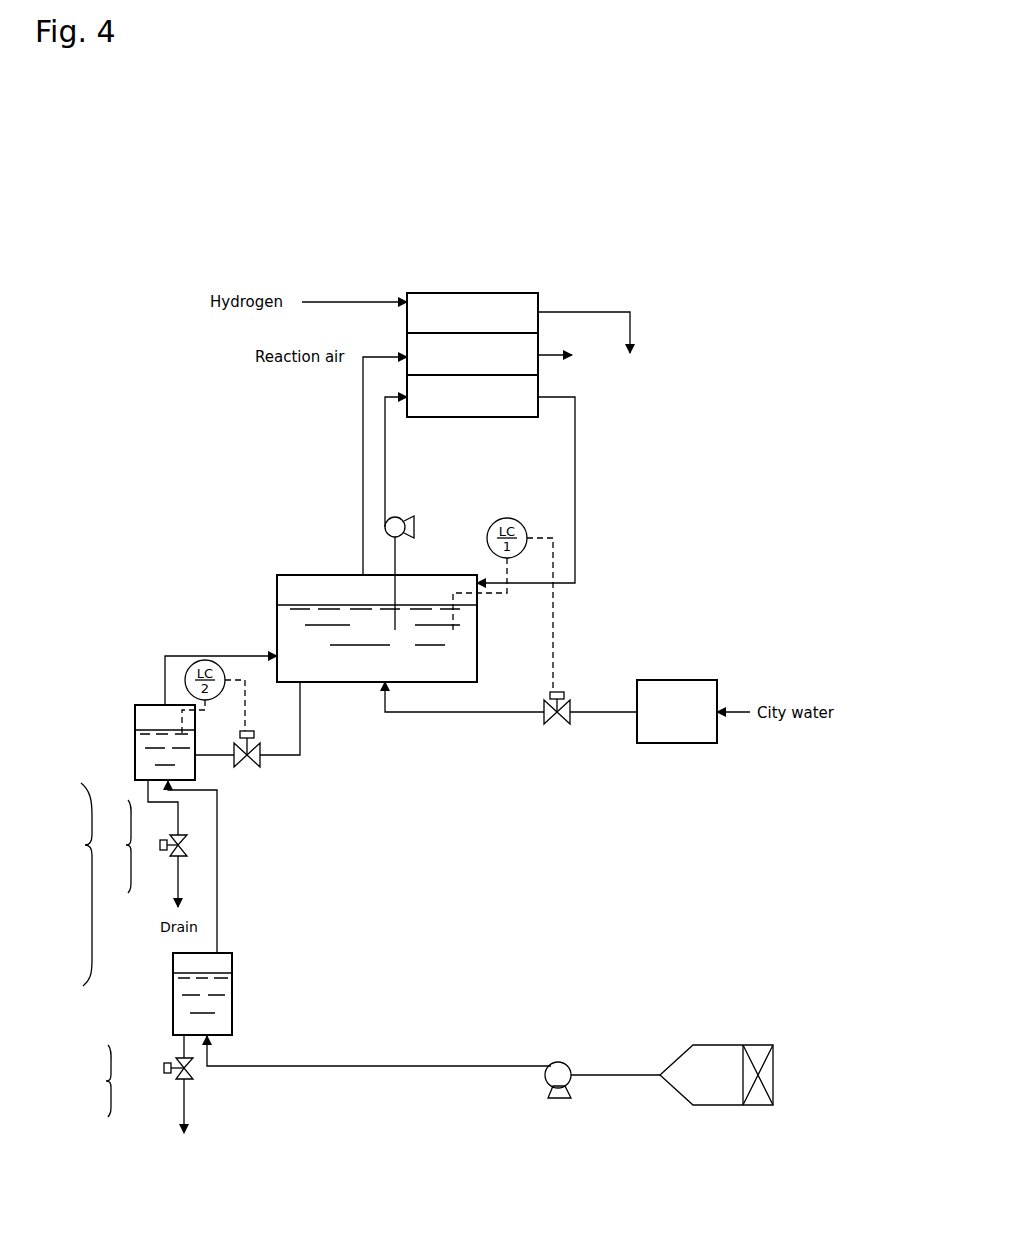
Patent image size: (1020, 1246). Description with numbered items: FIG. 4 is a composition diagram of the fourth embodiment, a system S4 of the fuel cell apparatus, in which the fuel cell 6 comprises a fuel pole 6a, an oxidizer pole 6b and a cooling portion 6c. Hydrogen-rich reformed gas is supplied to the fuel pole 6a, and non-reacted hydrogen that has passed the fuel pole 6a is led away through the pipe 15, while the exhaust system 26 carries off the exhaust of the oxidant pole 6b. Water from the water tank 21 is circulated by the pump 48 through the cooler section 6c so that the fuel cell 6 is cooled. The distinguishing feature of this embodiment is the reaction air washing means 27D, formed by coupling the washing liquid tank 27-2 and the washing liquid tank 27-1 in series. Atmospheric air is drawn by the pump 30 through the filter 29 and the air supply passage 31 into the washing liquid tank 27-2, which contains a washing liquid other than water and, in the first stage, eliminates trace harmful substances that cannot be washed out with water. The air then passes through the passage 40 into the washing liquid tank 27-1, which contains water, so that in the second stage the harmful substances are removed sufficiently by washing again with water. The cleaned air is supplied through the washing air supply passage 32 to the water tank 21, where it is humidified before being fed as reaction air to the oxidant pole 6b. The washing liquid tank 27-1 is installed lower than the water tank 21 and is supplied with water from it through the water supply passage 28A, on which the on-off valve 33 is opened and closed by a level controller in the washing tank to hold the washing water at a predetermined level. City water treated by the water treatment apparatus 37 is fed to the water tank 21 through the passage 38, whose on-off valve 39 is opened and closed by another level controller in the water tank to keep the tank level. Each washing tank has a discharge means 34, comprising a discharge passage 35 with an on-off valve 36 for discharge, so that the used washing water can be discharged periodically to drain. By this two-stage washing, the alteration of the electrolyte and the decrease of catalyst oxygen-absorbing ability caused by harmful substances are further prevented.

The system of the fuel cell apparatus S4 is at (205, 358).
The fuel cell 6 is at (470, 421).
The fuel pole 6a is at (425, 304).
The oxidizer pole 6b is at (418, 347).
The cooling portion 6c is at (422, 417).
The pipe 15 is at (589, 312).
The exhaust system 26 is at (557, 358).
The pump 48 is at (398, 517).
The water tank 21 is at (312, 575).
The washing air supply passage 32 is at (212, 656).
The washing liquid tank 27-1 is at (135, 742).
The on-off valve 33 is at (262, 716).
The water supply passage 28A is at (290, 757).
The reaction air washing means 27D is at (66, 884).
The discharge means 34 is at (100, 958).
The on-off valve for discharge 36 is at (163, 840).
The discharge passage 35 is at (178, 885).
The passage 40 is at (220, 870).
The washing liquid tank 27-2 is at (173, 990).
The on-off valve 39 is at (563, 692).
The water treatment apparatus 37 is at (666, 680).
The passage 38 is at (485, 713).
The air supply passage 31 is at (345, 1068).
The pump 30 is at (555, 1078).
The filter 29 is at (757, 1106).